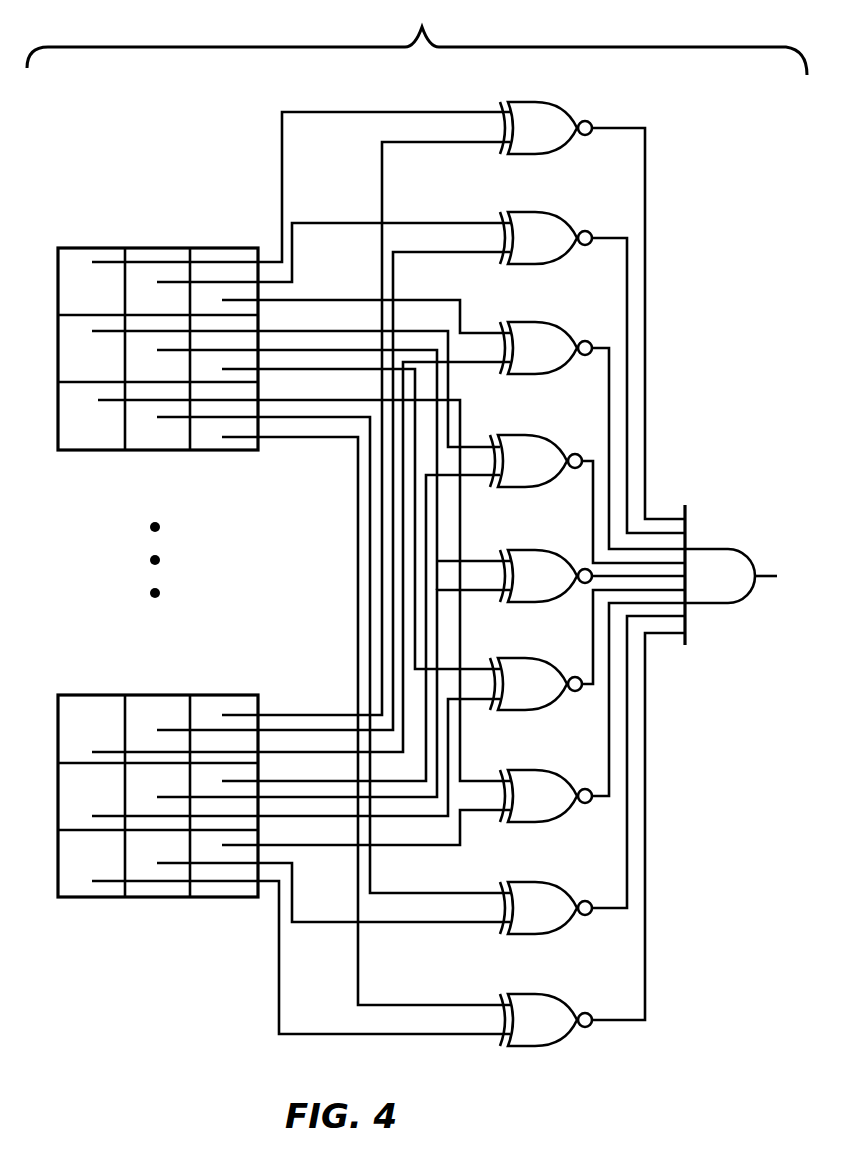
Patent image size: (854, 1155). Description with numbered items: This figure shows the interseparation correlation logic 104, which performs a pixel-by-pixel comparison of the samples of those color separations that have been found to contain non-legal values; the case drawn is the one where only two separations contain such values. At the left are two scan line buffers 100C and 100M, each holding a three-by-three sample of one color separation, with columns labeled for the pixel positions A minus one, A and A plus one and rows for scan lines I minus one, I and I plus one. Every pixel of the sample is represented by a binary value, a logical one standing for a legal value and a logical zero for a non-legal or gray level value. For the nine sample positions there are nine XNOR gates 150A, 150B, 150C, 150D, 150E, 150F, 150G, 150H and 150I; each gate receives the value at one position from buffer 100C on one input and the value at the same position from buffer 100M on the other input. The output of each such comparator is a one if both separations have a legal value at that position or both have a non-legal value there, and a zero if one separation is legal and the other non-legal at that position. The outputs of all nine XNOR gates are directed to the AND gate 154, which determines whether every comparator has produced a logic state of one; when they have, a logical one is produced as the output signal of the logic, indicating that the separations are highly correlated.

The logic 104 is at (417, 38).
The scan line buffer 100C is at (205, 452).
The scan line buffer 100M is at (205, 899).
The XNOR gate 150A is at (530, 100).
The XNOR gate 150B is at (530, 210).
The XNOR gate 150C is at (530, 320).
The XNOR gate 150D is at (523, 433).
The XNOR gate 150E is at (530, 548).
The XNOR gate 150F is at (523, 656).
The XNOR gate 150G is at (530, 768).
The XNOR gate 150H is at (530, 880).
The XNOR gate 150I is at (530, 992).
The AND gate 154 is at (728, 545).